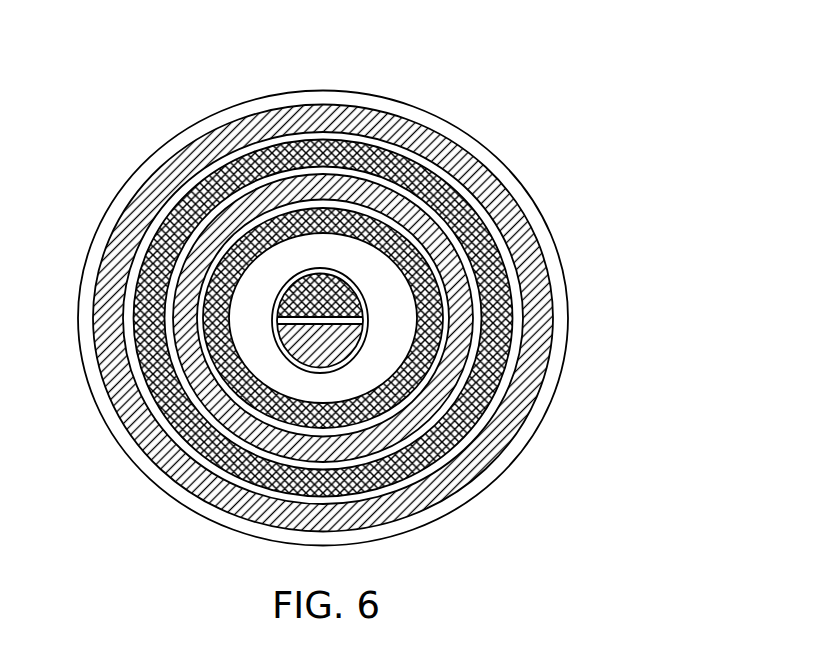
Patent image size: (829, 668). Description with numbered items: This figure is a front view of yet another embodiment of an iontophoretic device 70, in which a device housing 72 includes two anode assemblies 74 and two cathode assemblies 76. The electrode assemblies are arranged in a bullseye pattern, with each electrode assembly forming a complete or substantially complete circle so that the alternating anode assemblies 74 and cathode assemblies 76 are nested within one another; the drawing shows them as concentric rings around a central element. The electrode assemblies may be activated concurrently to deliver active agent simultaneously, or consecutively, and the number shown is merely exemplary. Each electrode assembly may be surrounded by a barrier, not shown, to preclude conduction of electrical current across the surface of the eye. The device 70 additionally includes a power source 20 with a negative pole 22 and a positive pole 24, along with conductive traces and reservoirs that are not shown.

The iontophoretic device 70 is at (353, 283).
The device housing 72 is at (510, 172).
The cathode assembly 76 is at (541, 248).
The anode assembly 74 is at (503, 363).
The power source 20 is at (282, 287).
The negative pole 22 is at (310, 267).
The positive pole 24 is at (293, 359).